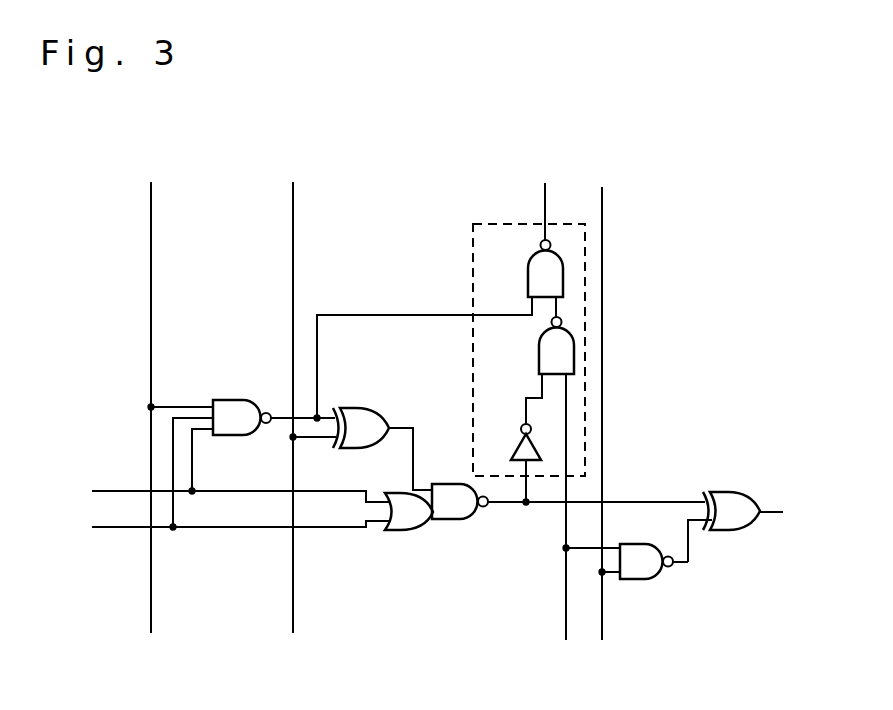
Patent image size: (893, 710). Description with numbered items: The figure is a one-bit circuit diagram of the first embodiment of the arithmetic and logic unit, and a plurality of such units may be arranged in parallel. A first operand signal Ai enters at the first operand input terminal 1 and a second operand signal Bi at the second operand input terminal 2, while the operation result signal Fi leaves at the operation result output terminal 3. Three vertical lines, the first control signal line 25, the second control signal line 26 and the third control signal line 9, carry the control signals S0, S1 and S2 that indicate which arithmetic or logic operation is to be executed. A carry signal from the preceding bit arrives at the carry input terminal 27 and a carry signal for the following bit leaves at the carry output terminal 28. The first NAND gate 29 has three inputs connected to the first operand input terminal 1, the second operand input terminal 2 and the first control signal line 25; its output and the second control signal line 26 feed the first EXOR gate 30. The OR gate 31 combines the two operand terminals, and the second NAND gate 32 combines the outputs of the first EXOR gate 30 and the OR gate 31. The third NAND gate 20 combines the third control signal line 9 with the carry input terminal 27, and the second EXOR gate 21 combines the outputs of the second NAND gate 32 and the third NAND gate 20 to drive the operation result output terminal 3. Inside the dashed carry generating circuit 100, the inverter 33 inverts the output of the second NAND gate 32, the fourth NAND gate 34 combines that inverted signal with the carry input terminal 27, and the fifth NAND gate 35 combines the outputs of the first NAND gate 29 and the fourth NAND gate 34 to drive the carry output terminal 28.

The first control signal line 25 is at (151, 212).
The second control signal line 26 is at (293, 212).
The carry output terminal 28 is at (545, 203).
The third control signal line 9 is at (602, 226).
The carry input terminal 27 is at (566, 600).
The second operand input terminal 2 is at (126, 491).
The first operand input terminal 1 is at (126, 528).
The first NAND gate 29 is at (231, 399).
The first EXOR gate 30 is at (351, 408).
The OR gate 31 is at (393, 532).
The second NAND gate 32 is at (453, 521).
The carry generating circuit 100 is at (473, 267).
The fifth NAND gate 35 is at (528, 287).
The fourth NAND gate 34 is at (539, 368).
The inverter 33 is at (516, 453).
The second EXOR gate 21 is at (718, 492).
The operation result output terminal 3 is at (771, 513).
The third NAND gate 20 is at (642, 582).